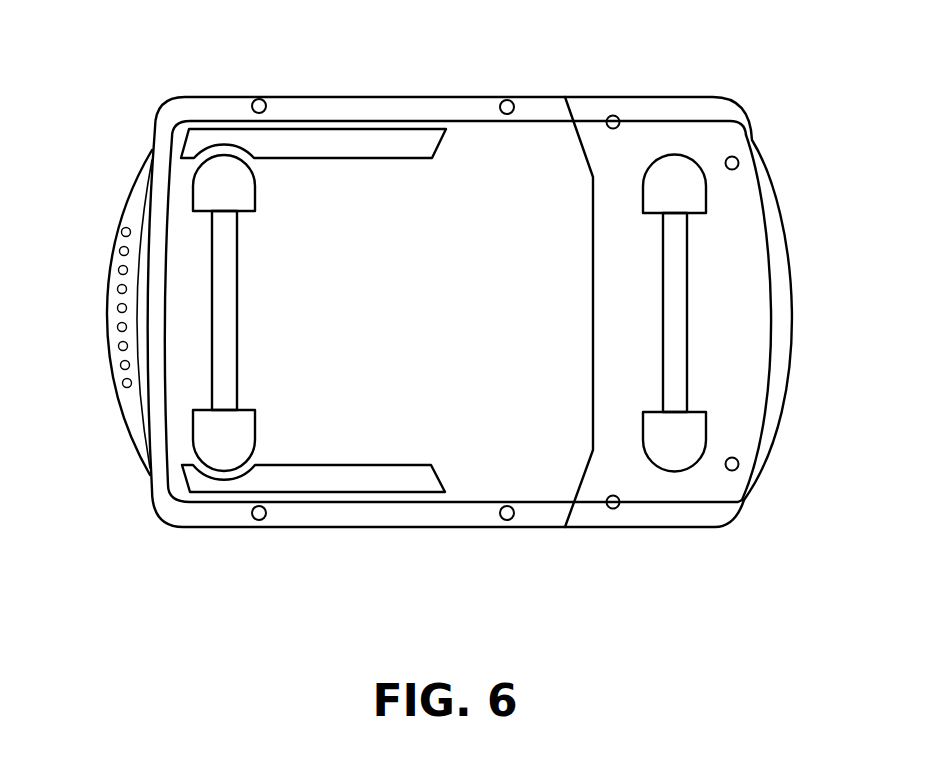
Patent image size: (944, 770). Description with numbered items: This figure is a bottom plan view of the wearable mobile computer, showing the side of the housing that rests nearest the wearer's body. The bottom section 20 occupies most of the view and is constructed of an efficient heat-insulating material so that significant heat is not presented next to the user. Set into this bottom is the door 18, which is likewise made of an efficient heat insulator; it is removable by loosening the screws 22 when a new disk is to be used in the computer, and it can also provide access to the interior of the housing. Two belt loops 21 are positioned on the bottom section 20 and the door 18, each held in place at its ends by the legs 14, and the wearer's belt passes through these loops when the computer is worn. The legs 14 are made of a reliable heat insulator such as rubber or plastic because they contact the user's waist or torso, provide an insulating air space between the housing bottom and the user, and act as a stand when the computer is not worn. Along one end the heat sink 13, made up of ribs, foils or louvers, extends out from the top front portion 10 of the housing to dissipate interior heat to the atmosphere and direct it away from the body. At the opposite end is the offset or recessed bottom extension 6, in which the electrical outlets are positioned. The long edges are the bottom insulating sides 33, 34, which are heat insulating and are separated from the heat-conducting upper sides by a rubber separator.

The bottom extension 6 is at (750, 240).
The top front portion 10 is at (150, 155).
The heat sink 13 is at (125, 235).
The legs 14 is at (218, 168).
The door 18 is at (442, 129).
The bottom section 20 is at (592, 490).
The belt loops 21 is at (220, 243).
The screws 22 is at (265, 102).
The bottom insulating side 33 is at (388, 526).
The bottom insulating side 34 is at (433, 97).